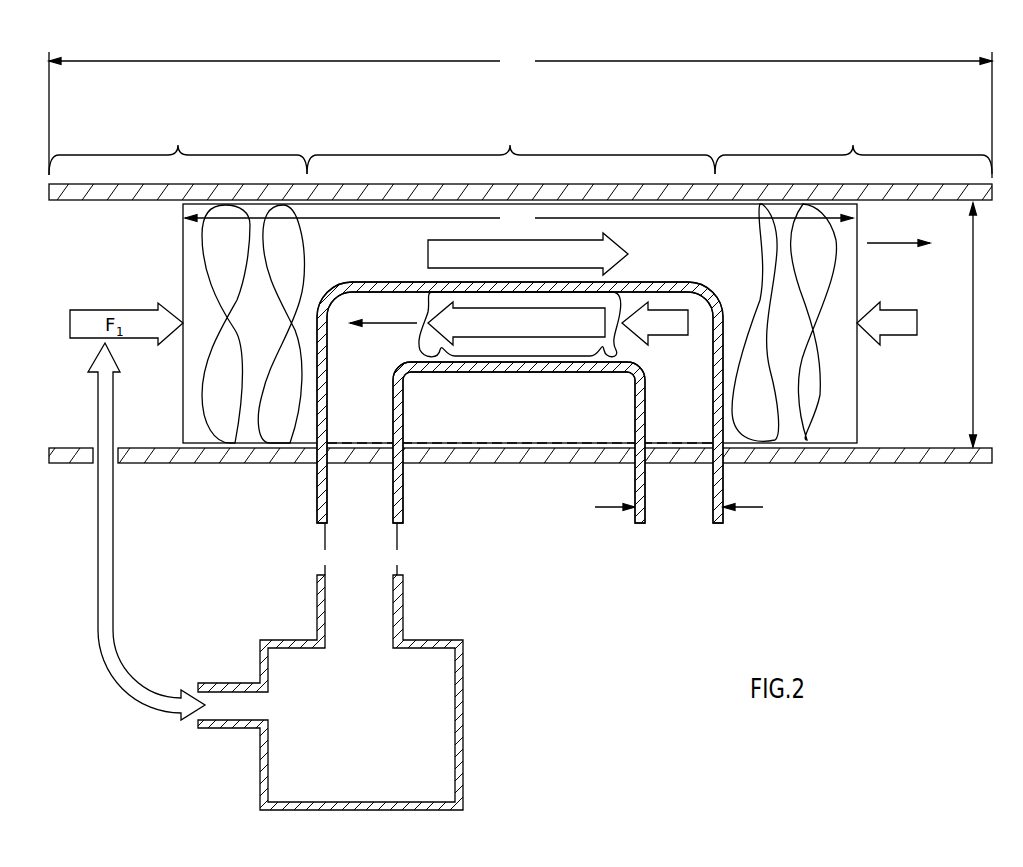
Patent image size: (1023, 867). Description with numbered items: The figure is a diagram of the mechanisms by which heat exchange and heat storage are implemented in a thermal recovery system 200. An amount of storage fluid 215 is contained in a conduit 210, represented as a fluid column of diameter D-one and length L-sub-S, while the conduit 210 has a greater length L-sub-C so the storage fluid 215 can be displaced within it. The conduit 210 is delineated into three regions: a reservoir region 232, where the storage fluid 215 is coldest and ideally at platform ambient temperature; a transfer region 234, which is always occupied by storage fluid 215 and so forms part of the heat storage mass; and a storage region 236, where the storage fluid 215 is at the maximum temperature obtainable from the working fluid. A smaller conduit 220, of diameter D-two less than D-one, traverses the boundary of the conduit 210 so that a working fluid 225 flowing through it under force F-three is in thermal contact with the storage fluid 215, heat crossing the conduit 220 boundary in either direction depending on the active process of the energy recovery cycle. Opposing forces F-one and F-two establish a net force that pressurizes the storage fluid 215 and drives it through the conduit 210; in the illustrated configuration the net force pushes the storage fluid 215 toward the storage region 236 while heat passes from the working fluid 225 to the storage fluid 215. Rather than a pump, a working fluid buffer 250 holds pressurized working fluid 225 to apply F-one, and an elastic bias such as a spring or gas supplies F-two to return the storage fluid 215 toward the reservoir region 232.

The thermal recovery system 200 is at (866, 48).
The conduit 210 is at (228, 464).
The storage fluid 215 is at (842, 374).
The conduit 220 is at (724, 480).
The working fluid 225 is at (537, 357).
The reservoir region 232 is at (242, 155).
The transfer region 234 is at (615, 155).
The storage region 236 is at (922, 155).
The working fluid buffer 250 is at (463, 715).